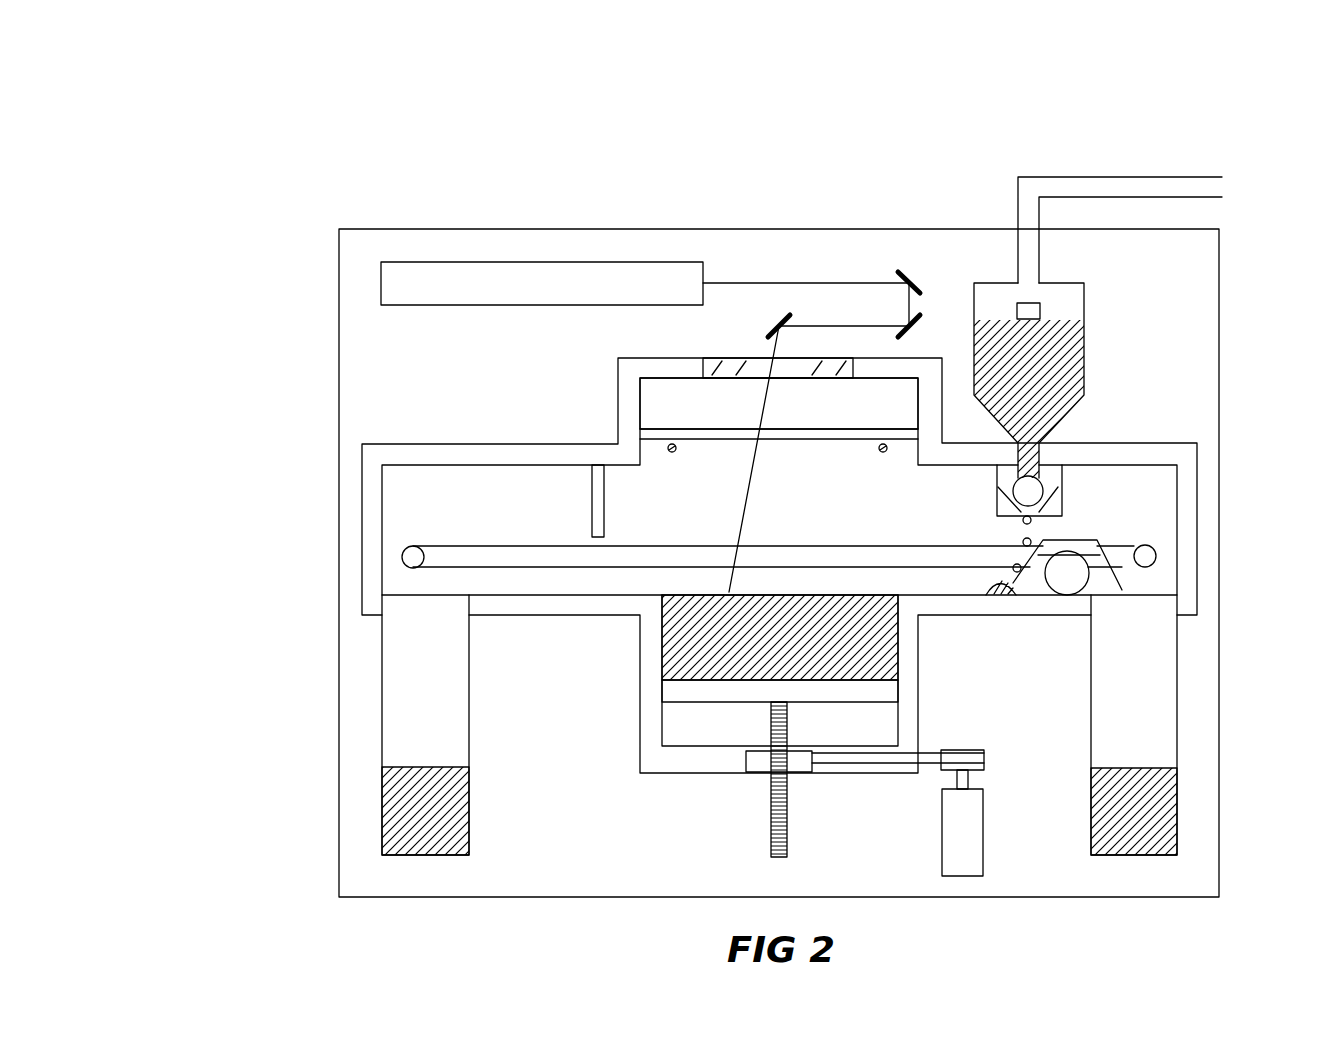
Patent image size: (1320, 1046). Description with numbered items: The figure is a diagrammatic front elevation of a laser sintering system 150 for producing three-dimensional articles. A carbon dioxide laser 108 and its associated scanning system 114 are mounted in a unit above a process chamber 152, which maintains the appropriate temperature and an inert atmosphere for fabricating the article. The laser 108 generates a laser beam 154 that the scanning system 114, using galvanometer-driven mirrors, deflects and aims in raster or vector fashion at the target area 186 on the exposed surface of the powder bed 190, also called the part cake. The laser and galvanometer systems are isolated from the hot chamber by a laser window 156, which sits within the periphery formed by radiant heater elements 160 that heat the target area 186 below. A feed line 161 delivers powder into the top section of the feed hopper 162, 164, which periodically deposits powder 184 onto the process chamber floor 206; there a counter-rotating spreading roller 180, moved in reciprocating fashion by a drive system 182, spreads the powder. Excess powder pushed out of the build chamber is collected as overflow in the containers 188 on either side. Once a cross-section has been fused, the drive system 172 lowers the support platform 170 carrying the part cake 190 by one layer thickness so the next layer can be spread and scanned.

The laser sintering system 150 is at (333, 158).
The carbon dioxide laser 108 is at (572, 297).
The scanning system 114 is at (845, 255).
The process chamber 152 is at (378, 520).
The laser beam 154 is at (767, 412).
The laser window 156 is at (712, 358).
The radiant heater elements 160 is at (690, 428).
The feed line 161 is at (1167, 177).
The feed hopper 162 is at (1048, 390).
The feed hopper 164 is at (1060, 458).
The process chamber floor 206 is at (548, 595).
The drive system 182 is at (1145, 547).
The spreading roller 180 is at (1075, 573).
The powder 184 is at (1000, 580).
The containers 188 is at (382, 638).
The target area 186 is at (695, 596).
The powder bed 190 is at (705, 640).
The support platform 170 is at (720, 697).
The drive system 172 is at (983, 830).